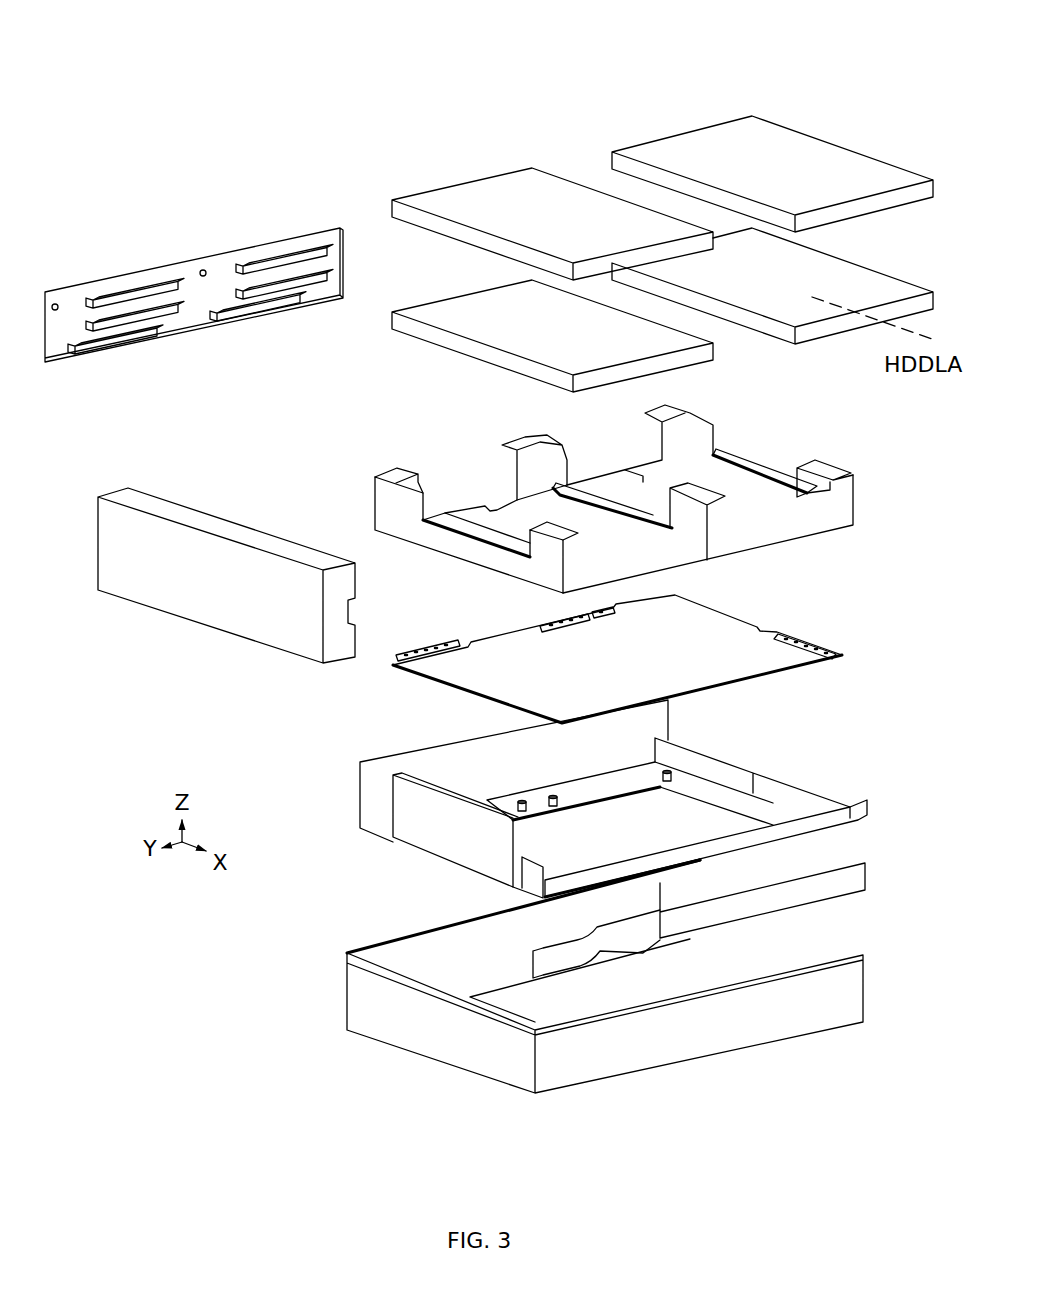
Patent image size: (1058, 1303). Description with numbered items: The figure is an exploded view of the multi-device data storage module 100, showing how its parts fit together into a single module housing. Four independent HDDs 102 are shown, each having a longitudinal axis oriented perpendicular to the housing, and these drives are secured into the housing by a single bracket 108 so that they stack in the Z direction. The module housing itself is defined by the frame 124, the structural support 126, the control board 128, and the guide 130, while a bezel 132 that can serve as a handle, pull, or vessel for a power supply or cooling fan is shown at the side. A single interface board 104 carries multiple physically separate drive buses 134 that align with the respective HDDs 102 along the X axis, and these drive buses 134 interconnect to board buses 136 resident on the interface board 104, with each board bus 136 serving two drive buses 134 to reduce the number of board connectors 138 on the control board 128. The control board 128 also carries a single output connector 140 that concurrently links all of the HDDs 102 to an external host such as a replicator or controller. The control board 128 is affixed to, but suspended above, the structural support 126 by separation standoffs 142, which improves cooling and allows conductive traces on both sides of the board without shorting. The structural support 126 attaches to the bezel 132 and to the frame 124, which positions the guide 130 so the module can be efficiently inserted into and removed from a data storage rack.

The multi-device data storage module 100 is at (186, 45).
The HDD 102 is at (662, 254).
The interface board 104 is at (54, 290).
The bracket 108 is at (614, 499).
The frame 124 is at (605, 976).
The structural support 126 is at (613, 799).
The control board 128 is at (617, 659).
The guide 130 is at (870, 888).
The bezel 132 is at (226, 575).
The drive bus 134 is at (181, 302).
The board bus 136 is at (144, 344).
The board connector 138 is at (539, 622).
The output connector 140 is at (829, 636).
The separation standoff 142 is at (527, 818).